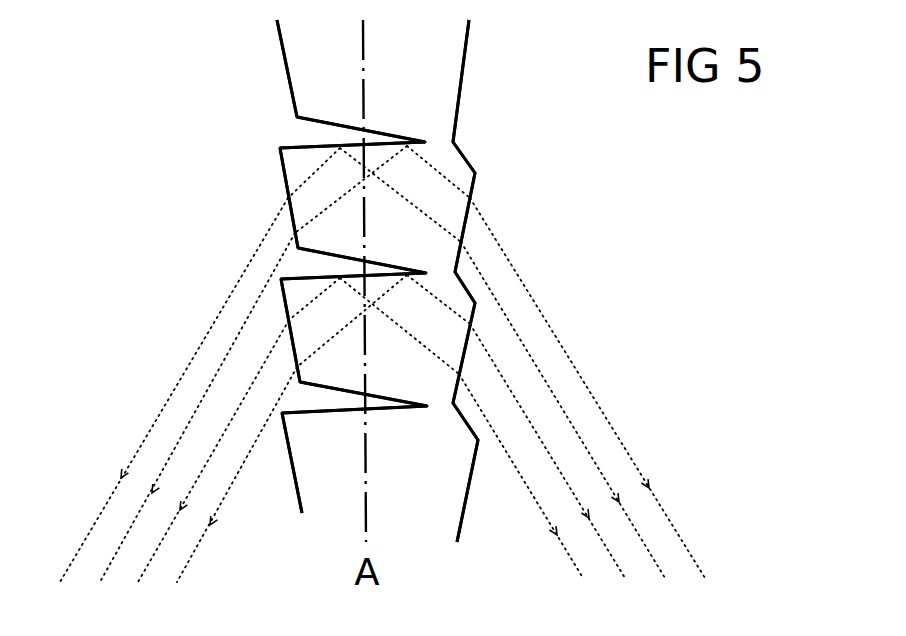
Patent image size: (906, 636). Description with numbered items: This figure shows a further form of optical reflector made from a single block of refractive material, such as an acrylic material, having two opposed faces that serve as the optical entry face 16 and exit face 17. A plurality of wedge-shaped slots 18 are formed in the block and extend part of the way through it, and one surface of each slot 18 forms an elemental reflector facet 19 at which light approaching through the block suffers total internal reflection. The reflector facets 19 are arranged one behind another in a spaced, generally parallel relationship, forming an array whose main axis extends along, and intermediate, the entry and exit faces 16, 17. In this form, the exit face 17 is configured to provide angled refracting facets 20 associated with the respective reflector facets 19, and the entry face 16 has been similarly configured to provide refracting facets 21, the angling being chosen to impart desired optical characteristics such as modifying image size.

The entry face 16 is at (590, 267).
The exit face 17 is at (150, 290).
The wedge-shaped slot 18 is at (306, 146).
The elemental reflector facet 19 is at (333, 146).
The elemental refractive facet 20 is at (288, 210).
The refracting facet 21 is at (473, 191).